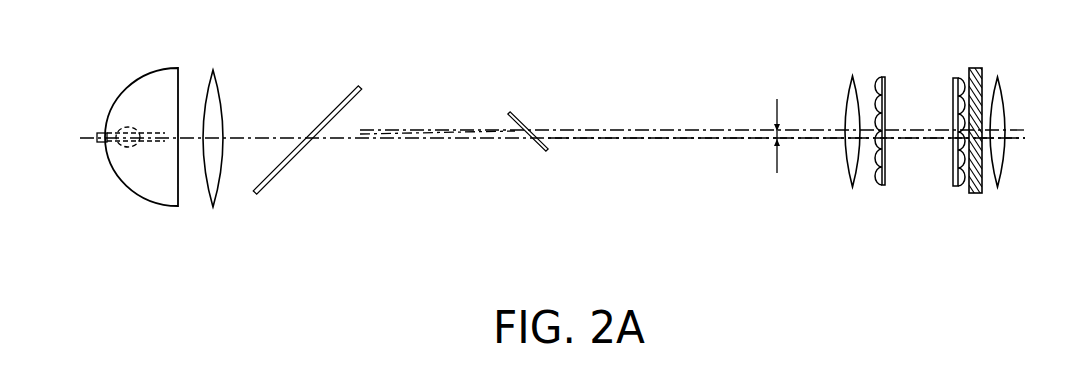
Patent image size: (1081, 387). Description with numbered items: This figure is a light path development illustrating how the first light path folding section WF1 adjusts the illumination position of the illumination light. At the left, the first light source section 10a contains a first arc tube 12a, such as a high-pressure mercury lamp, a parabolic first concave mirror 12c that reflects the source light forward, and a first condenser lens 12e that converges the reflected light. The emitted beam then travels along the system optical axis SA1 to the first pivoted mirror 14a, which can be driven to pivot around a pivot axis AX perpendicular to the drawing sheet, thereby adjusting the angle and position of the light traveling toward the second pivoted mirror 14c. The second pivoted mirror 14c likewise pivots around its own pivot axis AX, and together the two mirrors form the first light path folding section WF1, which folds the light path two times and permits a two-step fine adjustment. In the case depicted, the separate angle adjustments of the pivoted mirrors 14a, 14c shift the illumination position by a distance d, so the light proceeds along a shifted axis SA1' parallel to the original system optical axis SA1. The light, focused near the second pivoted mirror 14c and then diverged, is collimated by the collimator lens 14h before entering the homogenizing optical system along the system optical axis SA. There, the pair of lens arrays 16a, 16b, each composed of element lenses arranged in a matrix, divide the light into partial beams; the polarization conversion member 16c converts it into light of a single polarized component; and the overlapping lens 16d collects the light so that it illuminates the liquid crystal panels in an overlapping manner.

The first light source section 10a is at (184, 242).
The first arc tube 12a is at (125, 149).
The first concave mirror 12c is at (148, 196).
The first condenser lens 12e is at (218, 207).
The first pivoted mirror 14a is at (277, 172).
The second pivoted mirror 14c is at (540, 150).
The collimator lens 14h is at (850, 77).
The lens array 16a is at (882, 78).
The lens array 16b is at (957, 78).
The polarization conversion member 16c is at (977, 68).
The overlapping lens 16d is at (997, 77).
The pivot axis AX is at (308, 137).
The system optical axis SA1 is at (631, 103).
The shifted system optical axis SA1' is at (786, 168).
The system optical axis SA is at (915, 130).
The first light path folding section WF1 is at (416, 98).
The distance d is at (768, 136).